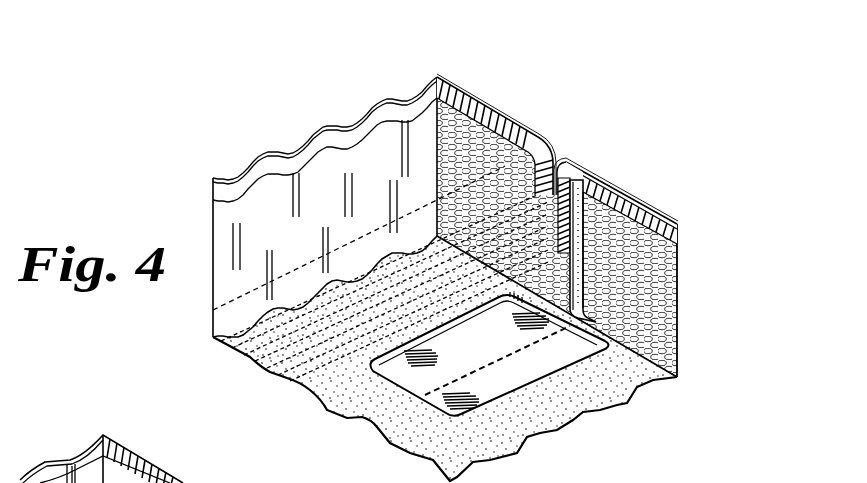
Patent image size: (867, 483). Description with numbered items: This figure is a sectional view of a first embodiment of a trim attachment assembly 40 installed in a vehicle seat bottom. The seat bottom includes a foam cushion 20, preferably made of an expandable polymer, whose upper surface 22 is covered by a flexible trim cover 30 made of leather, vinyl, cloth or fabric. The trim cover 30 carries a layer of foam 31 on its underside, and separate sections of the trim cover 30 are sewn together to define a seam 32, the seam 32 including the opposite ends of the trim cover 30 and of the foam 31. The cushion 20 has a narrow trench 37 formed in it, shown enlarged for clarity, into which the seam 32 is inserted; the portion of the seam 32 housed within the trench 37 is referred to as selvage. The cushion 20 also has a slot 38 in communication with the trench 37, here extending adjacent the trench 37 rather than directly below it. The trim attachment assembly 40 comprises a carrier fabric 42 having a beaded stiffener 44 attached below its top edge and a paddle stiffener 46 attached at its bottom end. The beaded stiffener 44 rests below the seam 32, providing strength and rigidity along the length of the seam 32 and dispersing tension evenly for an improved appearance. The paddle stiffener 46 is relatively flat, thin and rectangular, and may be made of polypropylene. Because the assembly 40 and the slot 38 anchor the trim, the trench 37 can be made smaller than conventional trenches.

The foam cushion 20 is at (511, 195).
The upper surface 22 is at (487, 120).
The trim cover 30 is at (479, 100).
The layer of foam 31 is at (490, 193).
The seam 32 is at (557, 200).
The trench 37 is at (573, 163).
The slot 38 is at (572, 243).
The trim attachment assembly 40 is at (614, 305).
The carrier fabric 42 is at (575, 282).
The beaded stiffener 44 is at (578, 250).
The paddle stiffener 46 is at (530, 375).